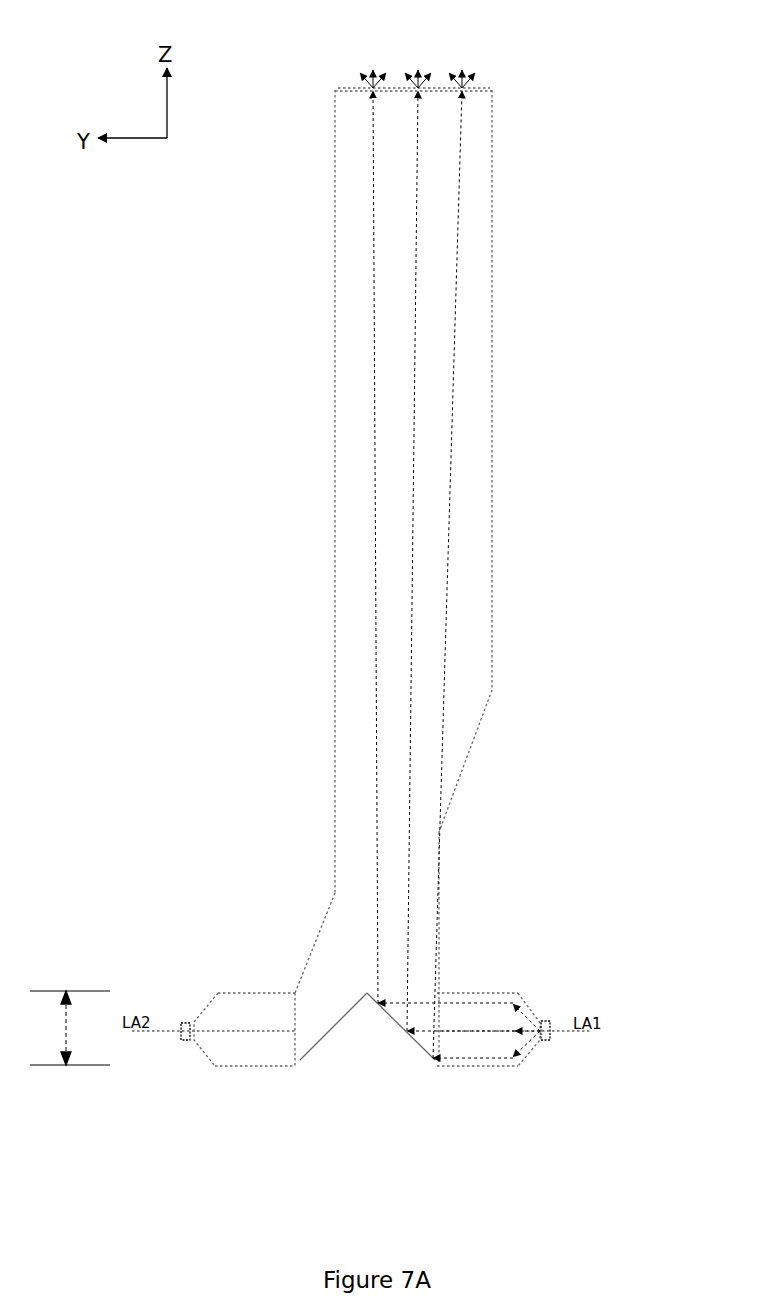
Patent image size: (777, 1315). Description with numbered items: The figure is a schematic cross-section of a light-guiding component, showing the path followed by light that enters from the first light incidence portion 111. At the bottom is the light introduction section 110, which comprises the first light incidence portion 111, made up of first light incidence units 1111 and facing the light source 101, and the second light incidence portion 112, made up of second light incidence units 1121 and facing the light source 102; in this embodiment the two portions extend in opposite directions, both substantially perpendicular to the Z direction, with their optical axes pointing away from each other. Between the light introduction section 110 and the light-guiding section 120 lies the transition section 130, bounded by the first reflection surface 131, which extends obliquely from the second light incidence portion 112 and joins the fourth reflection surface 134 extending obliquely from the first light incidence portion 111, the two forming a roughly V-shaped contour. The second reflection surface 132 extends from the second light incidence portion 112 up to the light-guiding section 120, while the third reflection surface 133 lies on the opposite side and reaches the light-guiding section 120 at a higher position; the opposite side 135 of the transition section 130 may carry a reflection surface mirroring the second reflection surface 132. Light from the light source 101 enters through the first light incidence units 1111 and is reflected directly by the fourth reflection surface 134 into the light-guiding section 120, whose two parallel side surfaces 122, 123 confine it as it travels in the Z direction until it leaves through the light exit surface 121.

The light source 101 is at (548, 1041).
The light source 102 is at (181, 1041).
The light introduction section 110 is at (69, 1028).
The first light incidence portion 111 is at (480, 993).
The first light incidence unit 1111 is at (514, 983).
The second light incidence portion 112 is at (218, 993).
The second light incidence unit 1121 is at (213, 987).
The light-guiding section 120 is at (715, 701).
The light exit surface 121 is at (483, 88).
The side surface 122 is at (335, 372).
The side surface 123 is at (492, 397).
The transition section 130 is at (715, 1062).
The first reflection surface 131 is at (310, 1050).
The second reflection surface 132 is at (313, 940).
The third reflection surface 133 is at (473, 755).
The fourth reflection surface 134 is at (420, 1050).
The opposite side 135 is at (440, 877).